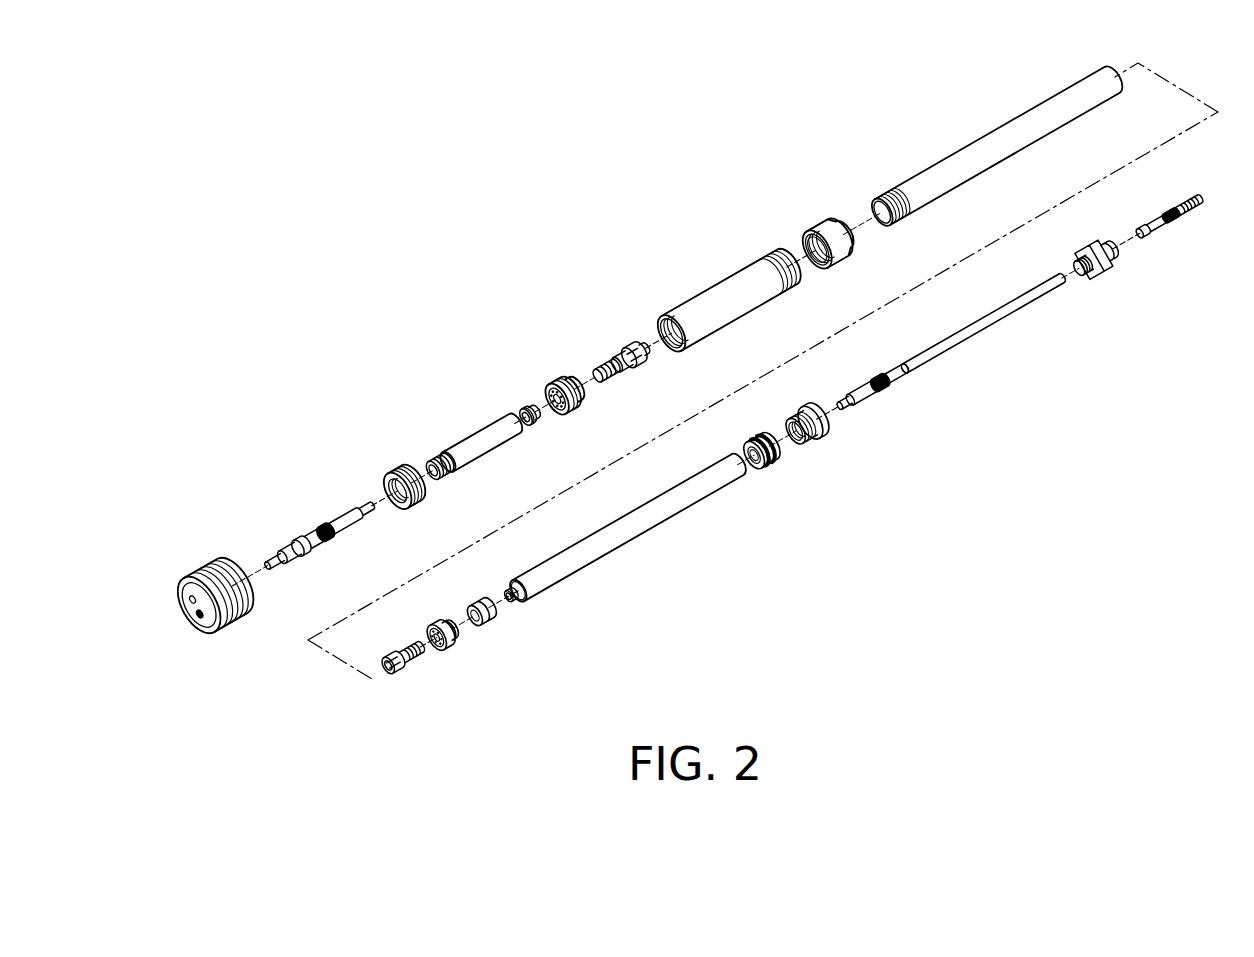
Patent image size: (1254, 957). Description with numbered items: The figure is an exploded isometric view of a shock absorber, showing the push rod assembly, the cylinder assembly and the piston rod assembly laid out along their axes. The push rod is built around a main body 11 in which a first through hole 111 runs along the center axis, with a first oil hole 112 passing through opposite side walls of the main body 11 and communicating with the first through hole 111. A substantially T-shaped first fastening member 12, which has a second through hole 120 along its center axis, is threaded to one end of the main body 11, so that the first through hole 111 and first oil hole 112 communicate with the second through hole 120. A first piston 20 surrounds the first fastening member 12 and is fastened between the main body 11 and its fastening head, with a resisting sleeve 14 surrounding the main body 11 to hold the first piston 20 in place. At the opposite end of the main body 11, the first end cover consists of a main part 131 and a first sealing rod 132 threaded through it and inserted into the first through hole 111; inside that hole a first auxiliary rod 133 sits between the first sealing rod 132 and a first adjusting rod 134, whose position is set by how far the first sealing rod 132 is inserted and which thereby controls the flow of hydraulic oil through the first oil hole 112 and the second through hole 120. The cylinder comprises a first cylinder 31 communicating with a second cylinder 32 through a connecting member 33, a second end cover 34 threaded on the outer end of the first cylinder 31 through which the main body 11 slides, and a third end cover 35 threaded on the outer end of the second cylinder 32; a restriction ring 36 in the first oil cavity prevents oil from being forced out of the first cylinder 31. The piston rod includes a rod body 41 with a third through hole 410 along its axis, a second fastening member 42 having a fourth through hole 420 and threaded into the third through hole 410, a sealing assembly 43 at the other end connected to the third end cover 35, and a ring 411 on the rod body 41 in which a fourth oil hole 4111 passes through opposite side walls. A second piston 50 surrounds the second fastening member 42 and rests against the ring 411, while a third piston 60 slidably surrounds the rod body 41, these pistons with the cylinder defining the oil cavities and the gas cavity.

The main body 11 is at (576, 560).
The first through hole 111 is at (509, 600).
The first oil hole 112 is at (518, 586).
The first fastening member 12 is at (396, 645).
The second through hole 120 is at (392, 668).
The resisting sleeve 14 is at (476, 604).
The first piston 20 is at (440, 622).
The first cylinder 31 is at (950, 160).
The second cylinder 32 is at (722, 298).
The connecting member 33 is at (832, 222).
The second end cover 34 is at (810, 410).
The third end cover 35 is at (216, 570).
The restriction ring 36 is at (755, 442).
The rod body 41 is at (490, 433).
The third through hole 410 is at (436, 462).
The ring 411 is at (527, 406).
The fourth oil hole 4111 is at (536, 418).
The second fastening member 42 is at (608, 342).
The fourth through hole 420 is at (601, 382).
The sealing assembly 43 is at (326, 532).
The second piston 50 is at (566, 378).
The third piston 60 is at (394, 480).
The main part 131 is at (1116, 266).
The first sealing rod 132 is at (1171, 212).
The first auxiliary rod 133 is at (952, 345).
The first adjusting rod 134 is at (862, 400).